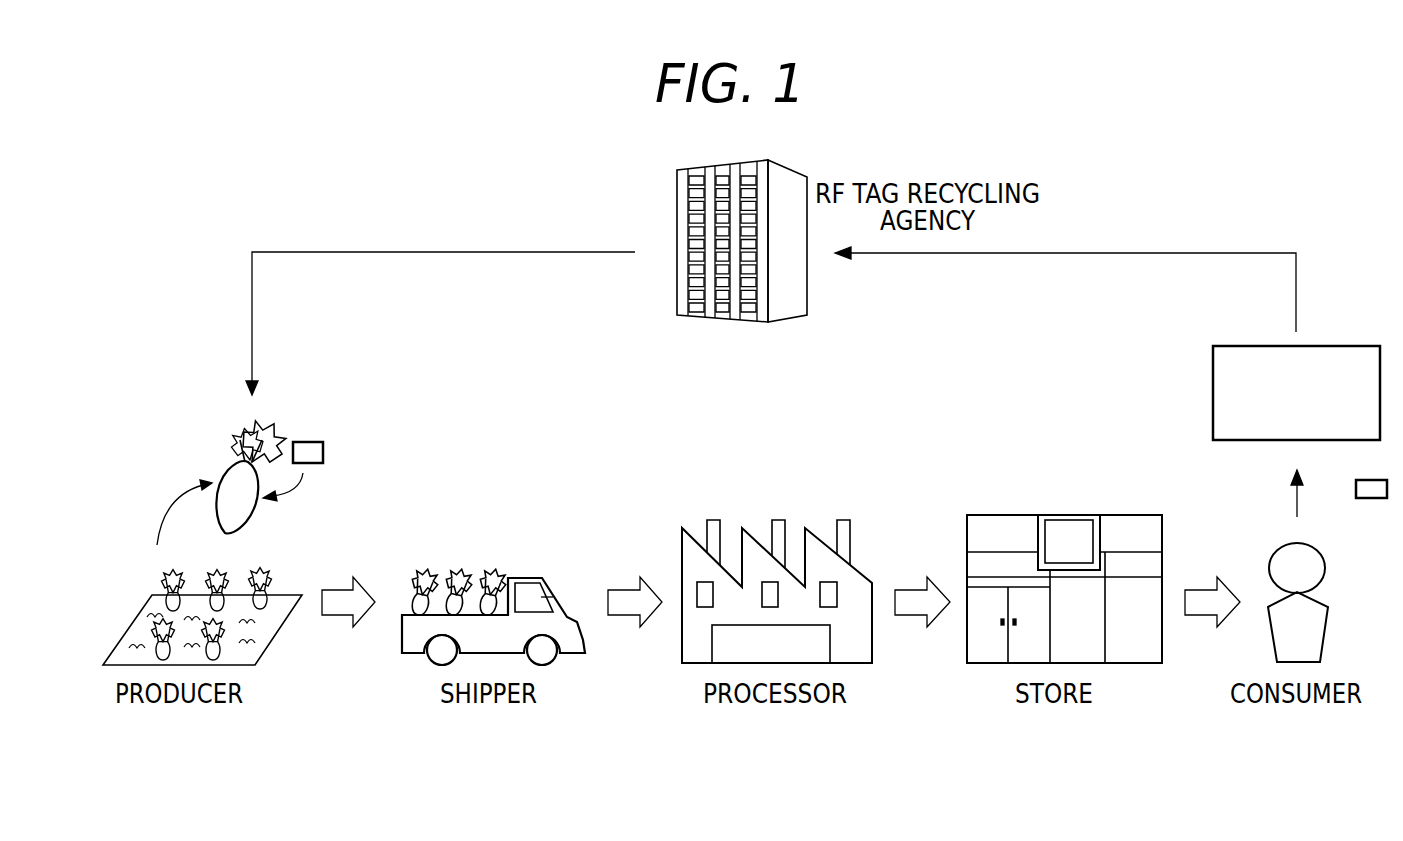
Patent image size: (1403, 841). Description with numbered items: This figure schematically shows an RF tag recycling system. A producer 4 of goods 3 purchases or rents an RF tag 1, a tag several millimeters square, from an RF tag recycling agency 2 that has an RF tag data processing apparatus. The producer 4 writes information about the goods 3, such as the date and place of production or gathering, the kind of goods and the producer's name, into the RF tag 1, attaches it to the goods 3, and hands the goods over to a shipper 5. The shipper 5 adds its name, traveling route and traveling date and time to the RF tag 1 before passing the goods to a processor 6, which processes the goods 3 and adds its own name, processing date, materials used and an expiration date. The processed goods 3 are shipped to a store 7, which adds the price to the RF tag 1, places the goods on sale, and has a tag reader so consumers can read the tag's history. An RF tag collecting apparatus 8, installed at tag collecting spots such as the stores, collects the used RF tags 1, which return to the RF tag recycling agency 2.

The RF tag 1 is at (310, 442).
The RF tag recycling agency 2 is at (677, 213).
The goods 3 is at (233, 468).
The producer 4 is at (135, 618).
The shipper 5 is at (525, 578).
The processor 6 is at (793, 530).
The store 7 is at (1075, 513).
The RF tag collecting apparatus 8 is at (1345, 346).